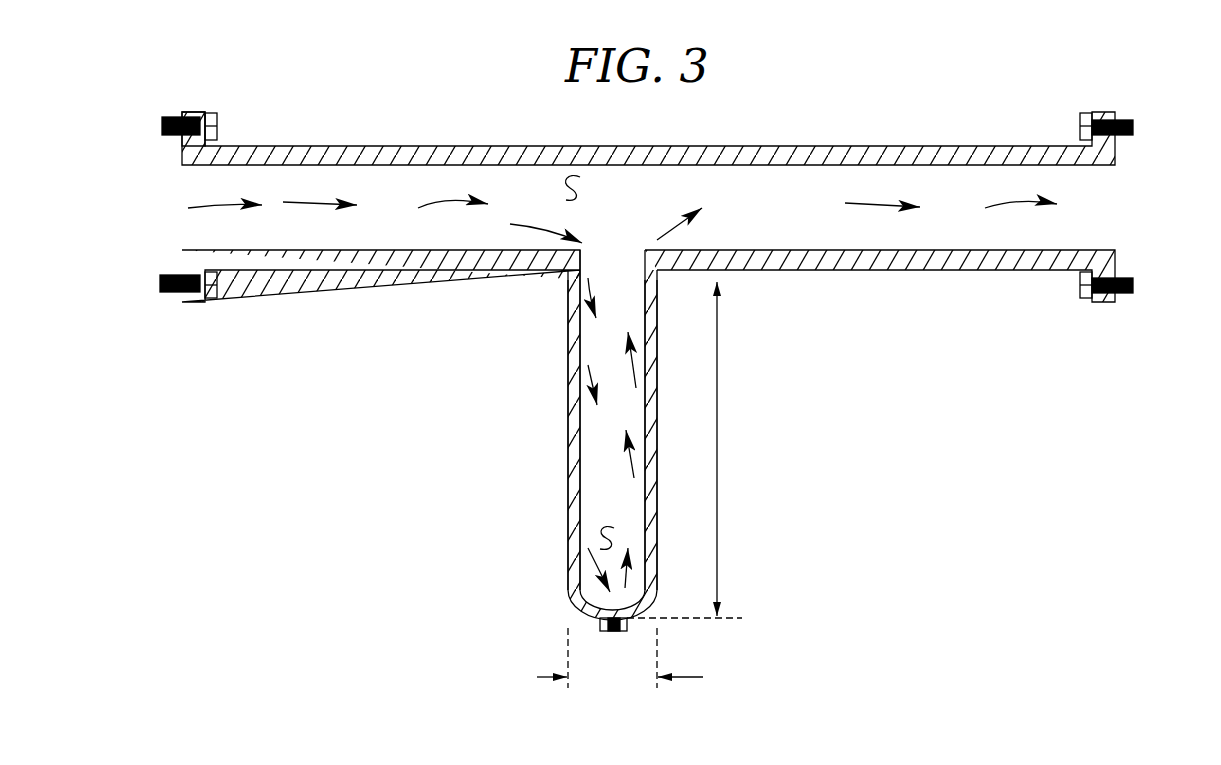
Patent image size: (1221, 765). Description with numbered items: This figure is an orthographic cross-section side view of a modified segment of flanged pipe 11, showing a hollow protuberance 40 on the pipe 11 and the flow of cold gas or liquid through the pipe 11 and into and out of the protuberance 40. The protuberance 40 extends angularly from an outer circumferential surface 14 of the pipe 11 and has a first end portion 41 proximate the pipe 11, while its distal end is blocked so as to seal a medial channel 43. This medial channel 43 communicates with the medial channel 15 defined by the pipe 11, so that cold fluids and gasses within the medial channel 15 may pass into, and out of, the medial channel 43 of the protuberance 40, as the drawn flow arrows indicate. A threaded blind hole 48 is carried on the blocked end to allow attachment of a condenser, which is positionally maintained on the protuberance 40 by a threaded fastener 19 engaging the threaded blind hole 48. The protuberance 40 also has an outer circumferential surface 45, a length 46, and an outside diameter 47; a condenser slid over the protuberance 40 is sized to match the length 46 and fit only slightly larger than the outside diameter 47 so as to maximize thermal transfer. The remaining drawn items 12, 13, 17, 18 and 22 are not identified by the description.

The pipe 11 is at (892, 276).
The upper plate 12 is at (1098, 165).
The upper plate lip 13 is at (212, 146).
The outer circumferential surface 14 is at (528, 270).
The medial channel 15 is at (590, 196).
The fastener bolt 17 is at (1113, 280).
The bolt 18 is at (185, 116).
The threaded fastener 19 is at (213, 120).
The flow direction arrows 22 is at (447, 210).
The pipe protuberance 40 is at (566, 521).
The first end portion 41 is at (658, 282).
The medial channel 43 is at (605, 525).
The outer circumferential surface 45 is at (567, 383).
The length 46 is at (684, 450).
The outside diameter 47 is at (620, 662).
The threaded blind hole 48 is at (600, 626).